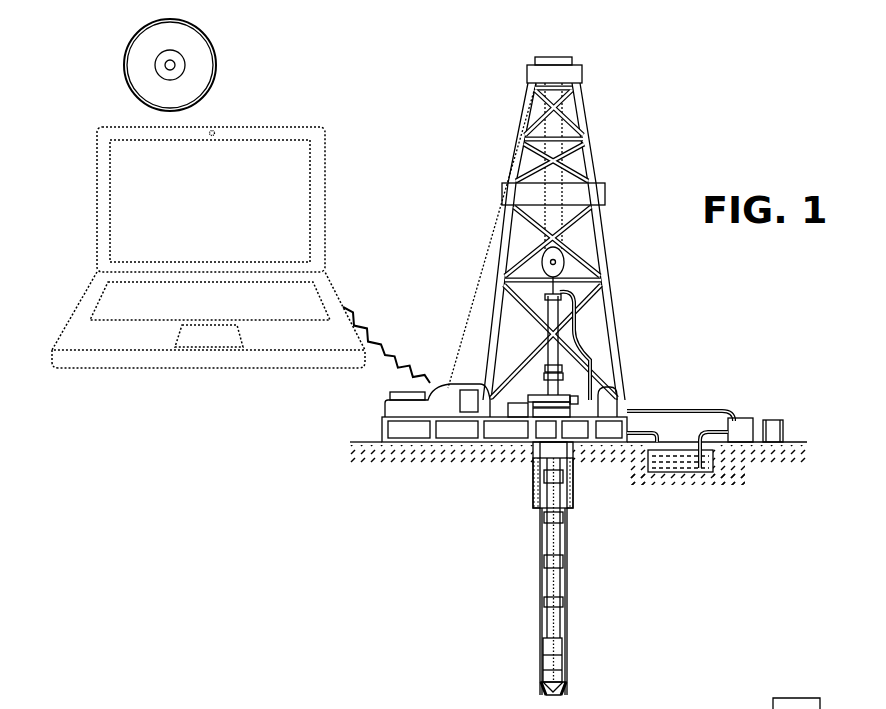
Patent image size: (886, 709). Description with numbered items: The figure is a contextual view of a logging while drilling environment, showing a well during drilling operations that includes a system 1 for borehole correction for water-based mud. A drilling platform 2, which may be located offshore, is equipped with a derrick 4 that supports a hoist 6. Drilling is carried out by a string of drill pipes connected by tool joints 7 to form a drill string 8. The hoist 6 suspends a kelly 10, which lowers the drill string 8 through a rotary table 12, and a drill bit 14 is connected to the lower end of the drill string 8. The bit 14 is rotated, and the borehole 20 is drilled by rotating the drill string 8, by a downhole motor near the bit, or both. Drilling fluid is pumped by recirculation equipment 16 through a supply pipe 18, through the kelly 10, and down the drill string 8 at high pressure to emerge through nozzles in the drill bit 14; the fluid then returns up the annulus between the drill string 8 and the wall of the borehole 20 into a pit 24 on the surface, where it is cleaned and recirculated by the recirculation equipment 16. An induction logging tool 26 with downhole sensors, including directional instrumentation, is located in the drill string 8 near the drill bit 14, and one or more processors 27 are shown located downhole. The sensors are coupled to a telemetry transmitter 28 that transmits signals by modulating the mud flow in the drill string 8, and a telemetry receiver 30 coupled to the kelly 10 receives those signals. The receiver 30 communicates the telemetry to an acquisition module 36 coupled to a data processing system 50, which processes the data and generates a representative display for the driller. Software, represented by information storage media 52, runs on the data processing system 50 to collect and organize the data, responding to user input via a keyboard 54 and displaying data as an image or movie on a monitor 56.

The system 1 is at (521, 621).
The drilling platform 2 is at (383, 420).
The derrick 4 is at (590, 165).
The hoist 6 is at (560, 258).
The tool joints 7 is at (542, 521).
The drill string 8 is at (545, 531).
The kelly 10 is at (553, 312).
The rotary table 12 is at (572, 398).
The drill bit 14 is at (562, 689).
The recirculation equipment 16 is at (742, 421).
The supply pipe 18 is at (690, 410).
The borehole 20 is at (566, 522).
The pit 24 is at (712, 463).
The induction logging tool 26 is at (544, 665).
The processors 27 is at (544, 655).
The telemetry transmitter 28 is at (557, 652).
The telemetry receiver 30 is at (557, 364).
The acquisition module 36 is at (473, 390).
The data processing system 50 is at (196, 254).
The information storage media 52 is at (213, 63).
The keyboard 54 is at (311, 317).
The monitor 56 is at (322, 190).